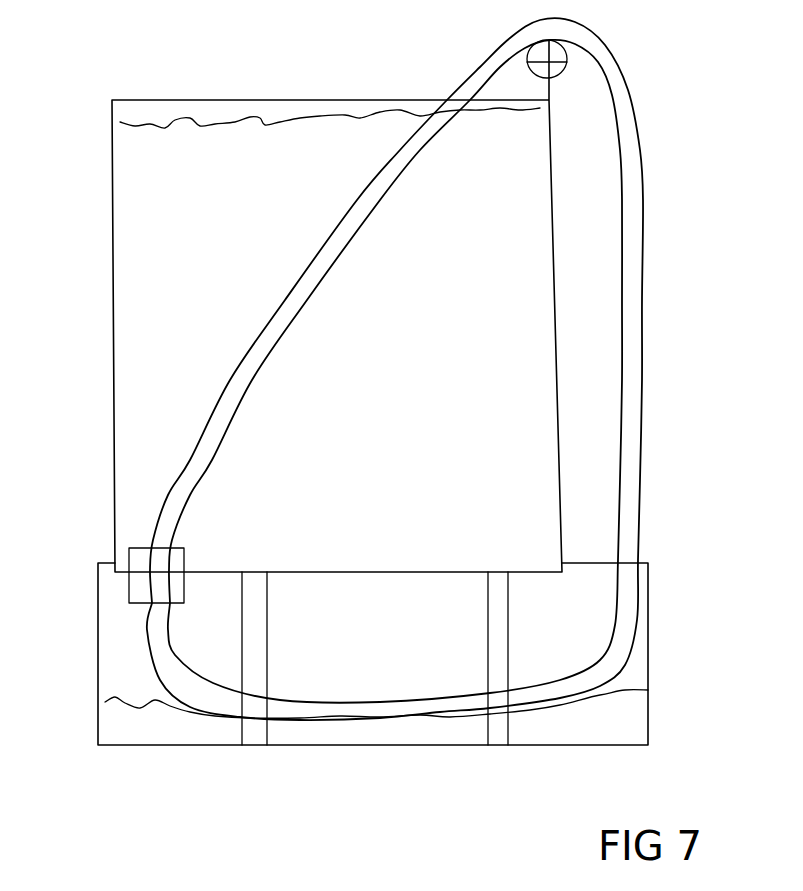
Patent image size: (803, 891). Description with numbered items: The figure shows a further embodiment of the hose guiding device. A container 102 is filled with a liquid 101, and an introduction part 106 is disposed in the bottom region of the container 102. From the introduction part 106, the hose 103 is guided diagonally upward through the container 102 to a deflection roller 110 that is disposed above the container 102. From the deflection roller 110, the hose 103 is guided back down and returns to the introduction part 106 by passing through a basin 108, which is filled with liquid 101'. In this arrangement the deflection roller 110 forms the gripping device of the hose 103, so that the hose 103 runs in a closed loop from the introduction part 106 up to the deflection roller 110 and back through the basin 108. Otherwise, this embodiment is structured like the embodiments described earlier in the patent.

The liquid level in reservoir 101 is at (330, 78).
The liquid level in collection basin 101' is at (376, 598).
The reservoir tank 102 is at (118, 315).
The hose loop 103 is at (316, 302).
The coupling block 106 is at (199, 556).
The collection basin 108 is at (95, 594).
The hose support / pulley 110 is at (533, 105).